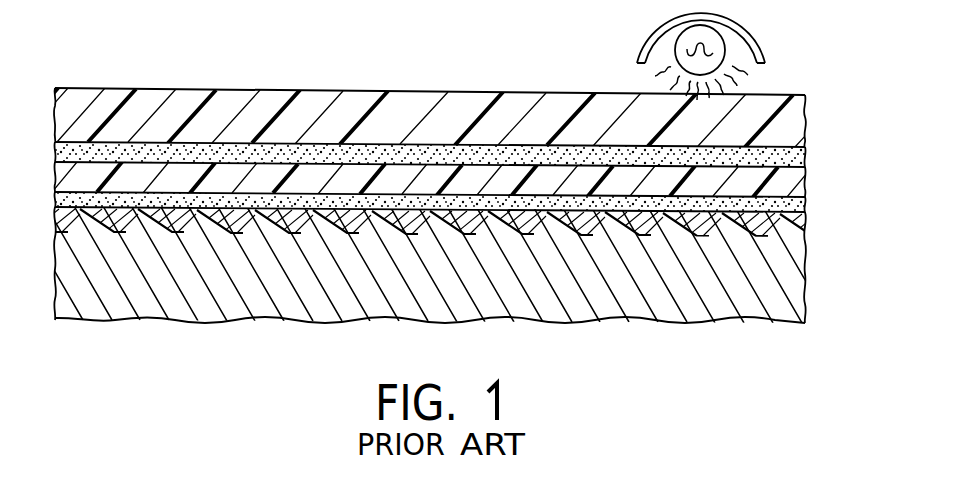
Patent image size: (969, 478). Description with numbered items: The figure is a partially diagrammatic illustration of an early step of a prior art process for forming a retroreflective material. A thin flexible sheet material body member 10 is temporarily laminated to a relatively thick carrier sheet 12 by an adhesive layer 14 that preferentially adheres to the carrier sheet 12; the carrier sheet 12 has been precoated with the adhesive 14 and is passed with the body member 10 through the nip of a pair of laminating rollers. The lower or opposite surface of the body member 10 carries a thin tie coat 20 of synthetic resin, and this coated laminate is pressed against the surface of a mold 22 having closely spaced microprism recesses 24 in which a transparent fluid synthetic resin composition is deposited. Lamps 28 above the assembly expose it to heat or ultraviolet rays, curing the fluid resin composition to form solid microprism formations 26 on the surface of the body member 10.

The body member 10 is at (802, 182).
The carrier sheet 12 is at (800, 113).
The adhesive layer 14 is at (803, 158).
The tie coat 20 is at (805, 208).
The mold 22 is at (803, 288).
The microprism recesses 24 is at (215, 232).
The microprism formations 26 is at (803, 227).
The lamps 28 is at (727, 47).